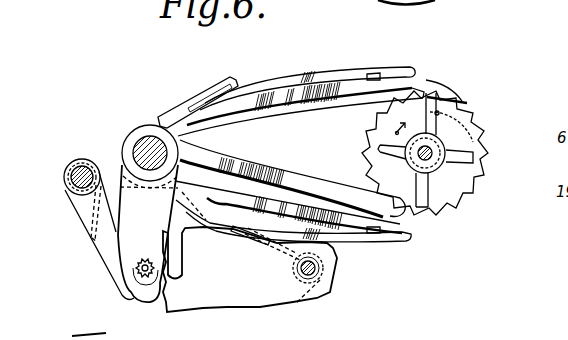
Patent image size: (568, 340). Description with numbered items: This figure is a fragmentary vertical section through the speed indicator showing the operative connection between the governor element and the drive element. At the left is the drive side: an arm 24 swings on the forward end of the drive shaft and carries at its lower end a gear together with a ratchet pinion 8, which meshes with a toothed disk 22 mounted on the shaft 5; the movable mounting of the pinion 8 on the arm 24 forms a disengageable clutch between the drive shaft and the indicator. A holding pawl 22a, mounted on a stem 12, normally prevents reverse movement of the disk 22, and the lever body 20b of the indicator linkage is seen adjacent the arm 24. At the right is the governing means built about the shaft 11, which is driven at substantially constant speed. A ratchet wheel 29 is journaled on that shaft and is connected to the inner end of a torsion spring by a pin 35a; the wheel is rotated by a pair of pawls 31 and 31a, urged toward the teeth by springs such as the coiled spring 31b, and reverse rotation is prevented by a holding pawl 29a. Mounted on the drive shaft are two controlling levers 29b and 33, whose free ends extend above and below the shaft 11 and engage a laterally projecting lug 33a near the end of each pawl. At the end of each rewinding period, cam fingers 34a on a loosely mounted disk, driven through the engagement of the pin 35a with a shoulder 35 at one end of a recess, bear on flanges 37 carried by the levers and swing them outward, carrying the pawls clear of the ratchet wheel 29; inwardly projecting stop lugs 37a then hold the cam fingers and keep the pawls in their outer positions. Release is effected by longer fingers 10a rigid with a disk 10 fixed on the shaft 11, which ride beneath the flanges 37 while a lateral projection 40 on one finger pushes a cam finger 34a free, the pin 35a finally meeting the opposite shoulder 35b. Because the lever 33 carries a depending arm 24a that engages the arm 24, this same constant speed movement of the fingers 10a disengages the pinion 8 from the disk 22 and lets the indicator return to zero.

The shaft 5 is at (316, 268).
The ratchet pinion 8 is at (131, 284).
The disk 10 is at (434, 161).
The fingers 10a is at (420, 102).
The shaft 11 is at (440, 167).
The stem 12 is at (70, 172).
The lever body 20b is at (148, 213).
The toothed disk 22 is at (205, 302).
The holding pawl 22a is at (110, 267).
The arm 24 is at (130, 212).
The depending arm 24a is at (190, 224).
The ratchet wheel 29 is at (482, 129).
The holding pawl 29a is at (307, 183).
The lever 29b is at (360, 87).
The pawl 31 is at (333, 75).
The pawl 31a is at (413, 236).
The coiled spring 31b is at (231, 82).
The lever 33 is at (348, 217).
The lug 33a is at (374, 76).
The cam fingers 34a is at (430, 199).
The shoulder 35 is at (390, 135).
The pin 35a is at (427, 132).
The shoulder 35b is at (483, 141).
The flanges 37 is at (463, 101).
The stop lugs 37a is at (427, 97).
The projection 40 is at (439, 113).